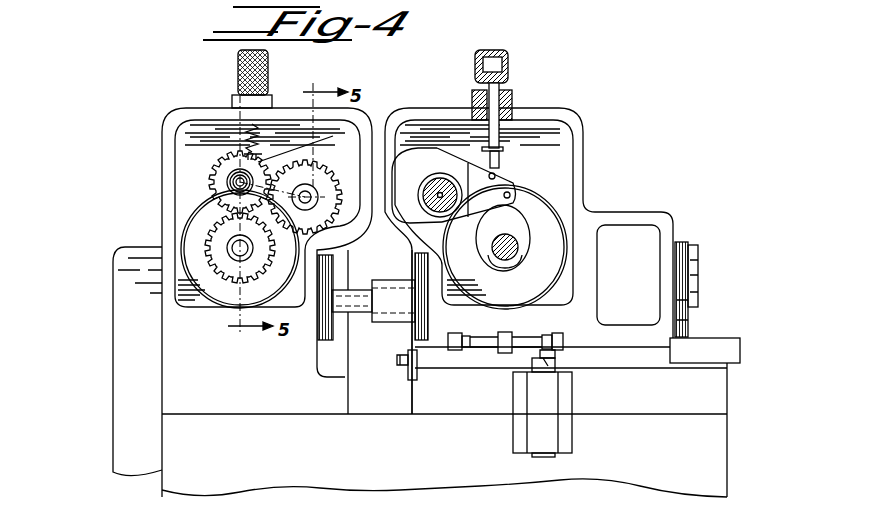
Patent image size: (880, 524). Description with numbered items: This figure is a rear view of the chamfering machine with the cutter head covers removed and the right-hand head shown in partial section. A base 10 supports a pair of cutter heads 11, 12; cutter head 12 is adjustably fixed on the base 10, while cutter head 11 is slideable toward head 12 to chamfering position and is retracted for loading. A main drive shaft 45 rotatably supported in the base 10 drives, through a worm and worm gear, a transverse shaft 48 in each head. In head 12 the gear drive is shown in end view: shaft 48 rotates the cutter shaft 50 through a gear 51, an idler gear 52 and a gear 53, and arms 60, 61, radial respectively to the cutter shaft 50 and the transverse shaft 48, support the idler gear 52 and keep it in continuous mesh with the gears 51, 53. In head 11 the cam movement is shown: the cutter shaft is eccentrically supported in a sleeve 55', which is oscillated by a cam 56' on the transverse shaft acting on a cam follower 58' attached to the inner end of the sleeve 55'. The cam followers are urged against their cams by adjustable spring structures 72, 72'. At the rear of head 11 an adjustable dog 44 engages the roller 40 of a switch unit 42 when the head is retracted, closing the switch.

The base 10 is at (637, 360).
The cutter head 11 is at (576, 108).
The cutter head 12 is at (191, 102).
The roller 40 is at (554, 354).
The switch unit 42 is at (548, 392).
The adjustable dog 44 is at (500, 348).
The main drive shaft 45 is at (357, 309).
The transverse shaft 48 is at (226, 258).
The cutter shaft 50 is at (268, 250).
The gear 51 is at (214, 247).
The idler gear 52 is at (214, 169).
The gear 53 is at (314, 178).
The sleeve 55' is at (427, 185).
The cam 56' is at (530, 245).
The cam follower 58' is at (495, 185).
The arm 60 is at (259, 159).
The arm 61 is at (259, 256).
The adjustable spring structure 72 is at (270, 79).
The adjustable spring structure 72' is at (520, 109).